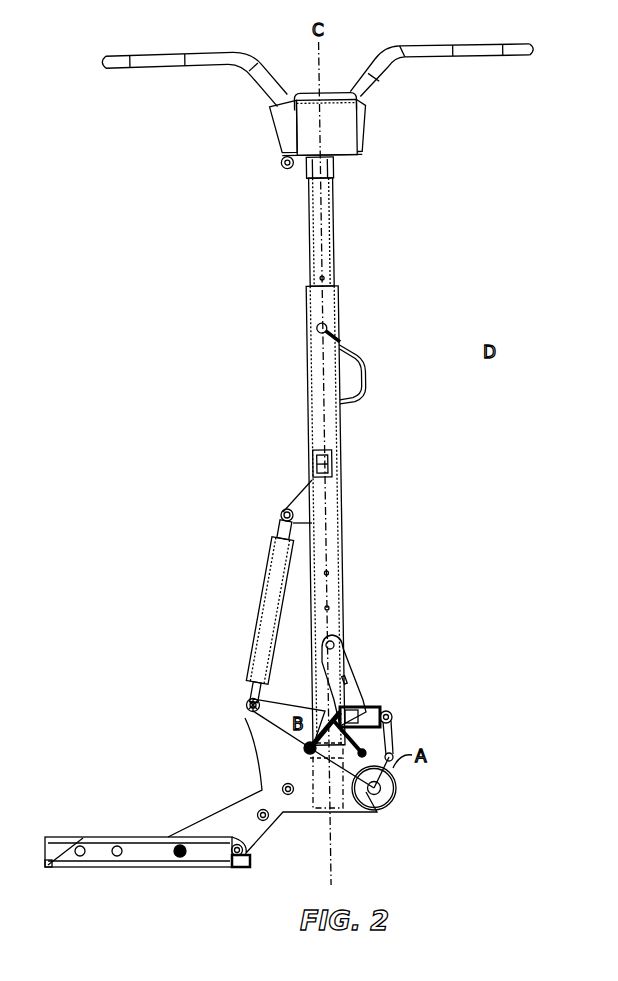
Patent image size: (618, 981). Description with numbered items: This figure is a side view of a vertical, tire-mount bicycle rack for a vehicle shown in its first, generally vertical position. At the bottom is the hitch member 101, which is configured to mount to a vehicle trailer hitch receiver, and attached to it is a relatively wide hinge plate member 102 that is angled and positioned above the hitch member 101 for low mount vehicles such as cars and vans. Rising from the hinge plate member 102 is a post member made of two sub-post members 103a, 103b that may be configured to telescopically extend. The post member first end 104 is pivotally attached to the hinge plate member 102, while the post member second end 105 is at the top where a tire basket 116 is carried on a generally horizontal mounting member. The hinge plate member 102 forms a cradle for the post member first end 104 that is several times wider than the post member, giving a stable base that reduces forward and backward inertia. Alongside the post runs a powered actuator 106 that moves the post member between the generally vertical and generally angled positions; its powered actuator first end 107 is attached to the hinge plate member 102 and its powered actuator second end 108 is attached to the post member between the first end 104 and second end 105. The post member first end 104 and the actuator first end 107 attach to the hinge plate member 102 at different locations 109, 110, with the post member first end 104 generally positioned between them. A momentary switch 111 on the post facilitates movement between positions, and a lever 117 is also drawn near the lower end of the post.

The hitch member 101 is at (113, 840).
The hinge plate member 102 is at (272, 758).
The sub-post member 103a is at (330, 305).
The sub-post member 103b is at (328, 232).
The post member first end 104 is at (321, 803).
The post member second end 105 is at (303, 170).
The powered actuator 106 is at (272, 586).
The powered actuator first end 107 is at (253, 702).
The powered actuator second end 108 is at (284, 511).
The attachment location 109 is at (380, 810).
The attachment location 110 is at (250, 709).
The switch 111 is at (337, 458).
The tire basket 116 is at (525, 52).
The release lever 117 is at (343, 663).